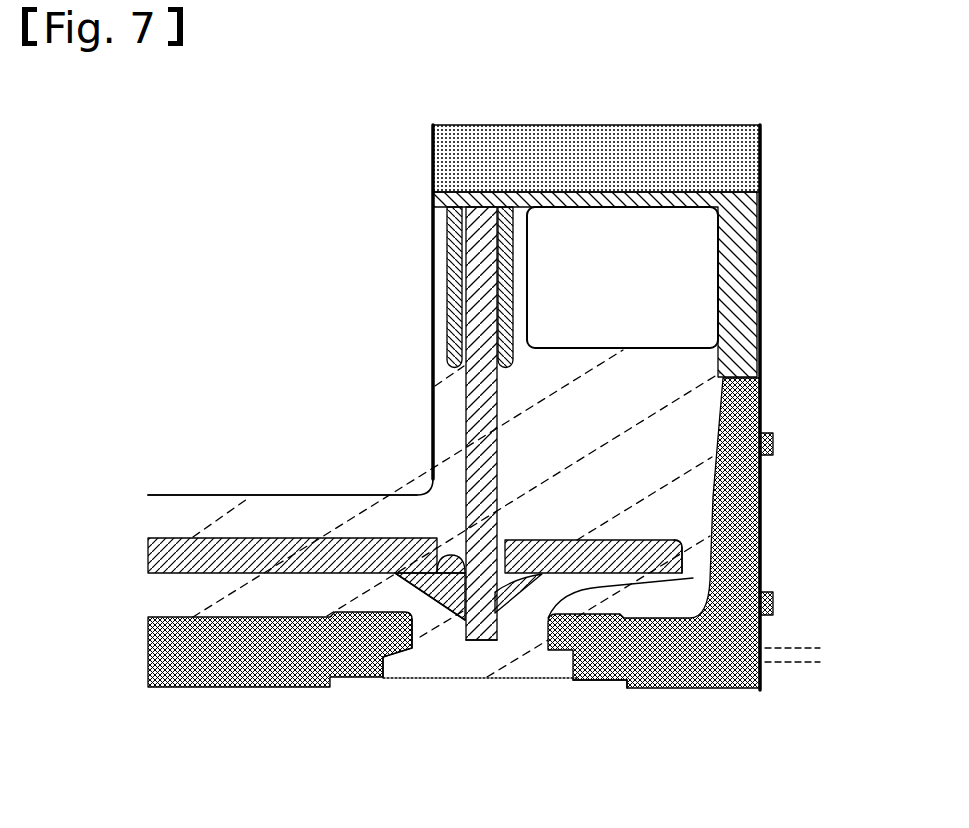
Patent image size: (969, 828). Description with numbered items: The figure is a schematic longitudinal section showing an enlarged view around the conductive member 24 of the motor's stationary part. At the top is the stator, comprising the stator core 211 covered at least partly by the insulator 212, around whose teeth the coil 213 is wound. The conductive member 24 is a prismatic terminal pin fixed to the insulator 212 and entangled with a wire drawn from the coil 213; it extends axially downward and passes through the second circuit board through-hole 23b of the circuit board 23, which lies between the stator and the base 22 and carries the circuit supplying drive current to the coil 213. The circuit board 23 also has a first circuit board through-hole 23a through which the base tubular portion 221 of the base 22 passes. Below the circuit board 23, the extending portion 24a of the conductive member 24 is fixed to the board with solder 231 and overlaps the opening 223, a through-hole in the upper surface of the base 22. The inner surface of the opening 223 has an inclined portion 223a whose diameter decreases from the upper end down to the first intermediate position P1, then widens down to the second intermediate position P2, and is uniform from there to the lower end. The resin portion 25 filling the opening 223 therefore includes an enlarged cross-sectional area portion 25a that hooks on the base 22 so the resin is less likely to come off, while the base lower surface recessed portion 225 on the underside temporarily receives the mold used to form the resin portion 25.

The stator core 211 is at (433, 155).
The insulator 212 is at (450, 267).
The coil 213 is at (667, 310).
The conductive member 24 is at (477, 462).
The extending portion 24a is at (493, 638).
The resin portion 25 is at (315, 512).
The enlarged cross-sectional area portion 25a is at (408, 665).
The circuit board 23 is at (642, 540).
The first circuit board through-hole 23a is at (683, 552).
The second circuit board through-hole 23b is at (444, 556).
The base 22 is at (203, 683).
The base tubular portion 221 is at (748, 424).
The opening 223 is at (600, 576).
The inclined portion 223a is at (417, 633).
The base lower surface recessed portion 225 is at (613, 685).
The solder 231 is at (428, 589).
The first intermediate position P1 is at (802, 648).
The second intermediate position P2 is at (802, 663).